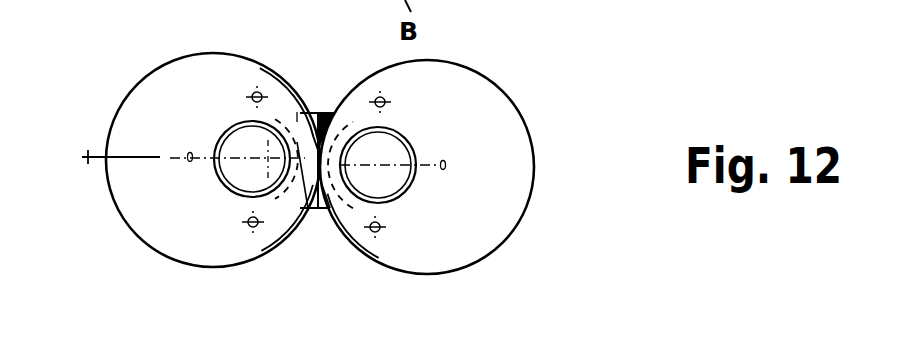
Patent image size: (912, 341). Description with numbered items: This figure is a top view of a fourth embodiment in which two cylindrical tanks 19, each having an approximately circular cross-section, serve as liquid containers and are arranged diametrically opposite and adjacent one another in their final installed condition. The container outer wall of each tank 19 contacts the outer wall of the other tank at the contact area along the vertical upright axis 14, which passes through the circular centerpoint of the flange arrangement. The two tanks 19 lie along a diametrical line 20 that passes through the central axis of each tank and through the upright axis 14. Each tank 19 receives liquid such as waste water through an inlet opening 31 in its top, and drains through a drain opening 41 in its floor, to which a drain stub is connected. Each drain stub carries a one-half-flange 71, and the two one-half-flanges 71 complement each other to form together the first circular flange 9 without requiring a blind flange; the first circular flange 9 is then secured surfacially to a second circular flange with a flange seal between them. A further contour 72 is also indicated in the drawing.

The first circular flange 9 is at (352, 124).
The vertical upright axis 14 is at (303, 156).
The cylindrical tank 19 is at (167, 232).
The diametrical line 20 is at (90, 157).
The inlet opening 31 is at (380, 179).
The drain opening 41 is at (313, 212).
The one-half-flange 71 is at (258, 64).
The outer contour 72 is at (369, 5).